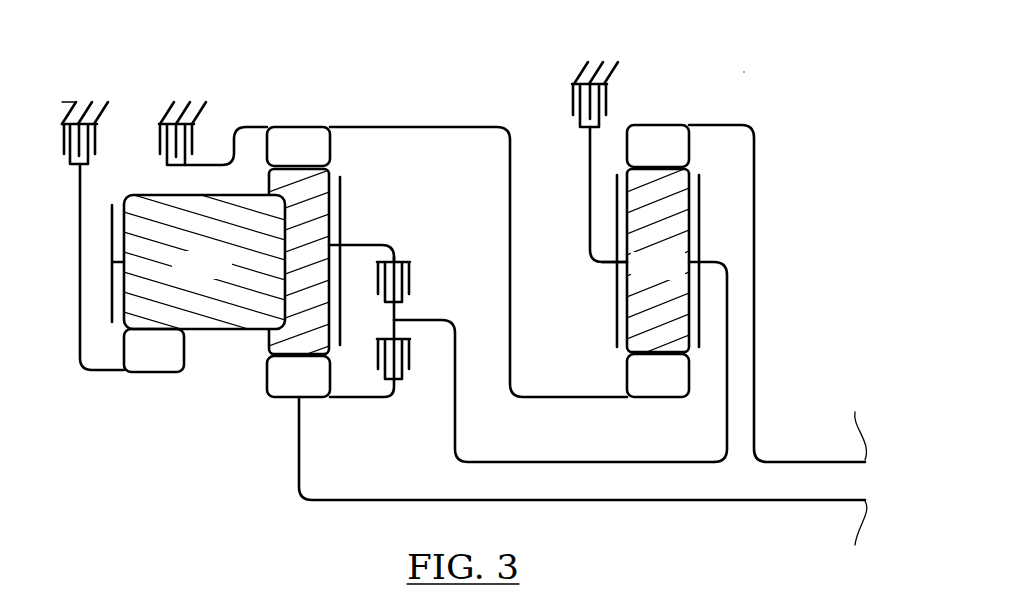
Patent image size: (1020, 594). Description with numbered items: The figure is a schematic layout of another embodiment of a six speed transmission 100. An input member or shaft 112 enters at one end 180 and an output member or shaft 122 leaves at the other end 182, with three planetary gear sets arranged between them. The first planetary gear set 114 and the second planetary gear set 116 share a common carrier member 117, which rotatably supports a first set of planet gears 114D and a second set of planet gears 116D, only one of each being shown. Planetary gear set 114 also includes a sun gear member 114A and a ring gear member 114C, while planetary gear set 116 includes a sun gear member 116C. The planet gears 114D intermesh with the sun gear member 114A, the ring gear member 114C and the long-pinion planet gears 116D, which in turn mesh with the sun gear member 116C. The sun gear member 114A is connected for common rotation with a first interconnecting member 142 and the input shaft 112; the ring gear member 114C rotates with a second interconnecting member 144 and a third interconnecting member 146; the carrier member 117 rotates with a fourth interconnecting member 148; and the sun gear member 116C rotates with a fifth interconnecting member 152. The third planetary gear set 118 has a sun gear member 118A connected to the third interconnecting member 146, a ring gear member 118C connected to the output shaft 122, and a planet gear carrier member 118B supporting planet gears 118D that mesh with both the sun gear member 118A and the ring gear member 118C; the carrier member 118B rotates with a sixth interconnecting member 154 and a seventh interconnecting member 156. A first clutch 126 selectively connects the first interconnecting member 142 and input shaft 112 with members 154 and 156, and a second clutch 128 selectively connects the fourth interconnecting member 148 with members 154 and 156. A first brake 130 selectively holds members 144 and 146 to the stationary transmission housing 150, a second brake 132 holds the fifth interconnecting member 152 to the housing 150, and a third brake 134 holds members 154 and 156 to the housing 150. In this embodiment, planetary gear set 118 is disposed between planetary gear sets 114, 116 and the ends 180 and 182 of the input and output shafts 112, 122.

The six speed transmission 100 is at (742, 72).
The input member or shaft 112 is at (295, 438).
The planetary gear set 114 is at (276, 219).
The sun gear member 114A is at (322, 388).
The ring gear member 114C is at (322, 158).
The first set of planet gears 114D is at (285, 183).
The planetary gear set 116 is at (195, 321).
The sun gear member 116C is at (176, 363).
The second set of planet gears 116D is at (224, 276).
The common carrier member 117 is at (342, 185).
The planetary gear set 118 is at (653, 217).
The sun gear member 118A is at (681, 388).
The planet gear carrier member 118B is at (653, 244).
The ring gear member 118C is at (681, 158).
The planet gears 118D is at (682, 276).
The output member or shaft 122 is at (754, 270).
The first clutch 126 is at (409, 360).
The second clutch 128 is at (409, 273).
The first brake 130 is at (192, 137).
The second brake 132 is at (95, 141).
The third brake 134 is at (606, 94).
The first shaft or interconnecting member 142 is at (347, 397).
The second shaft or interconnecting member 144 is at (258, 122).
The third shaft or interconnecting member 146 is at (408, 121).
The fourth shaft or interconnecting member 148 is at (357, 243).
The stationary element or transmission housing 150 is at (158, 110).
The fifth shaft or interconnecting member 152 is at (79, 228).
The sixth shaft or interconnecting member 154 is at (585, 180).
The seventh shaft or interconnecting member 156 is at (623, 458).
The end of input shaft 180 is at (855, 541).
The end of output shaft 182 is at (855, 422).